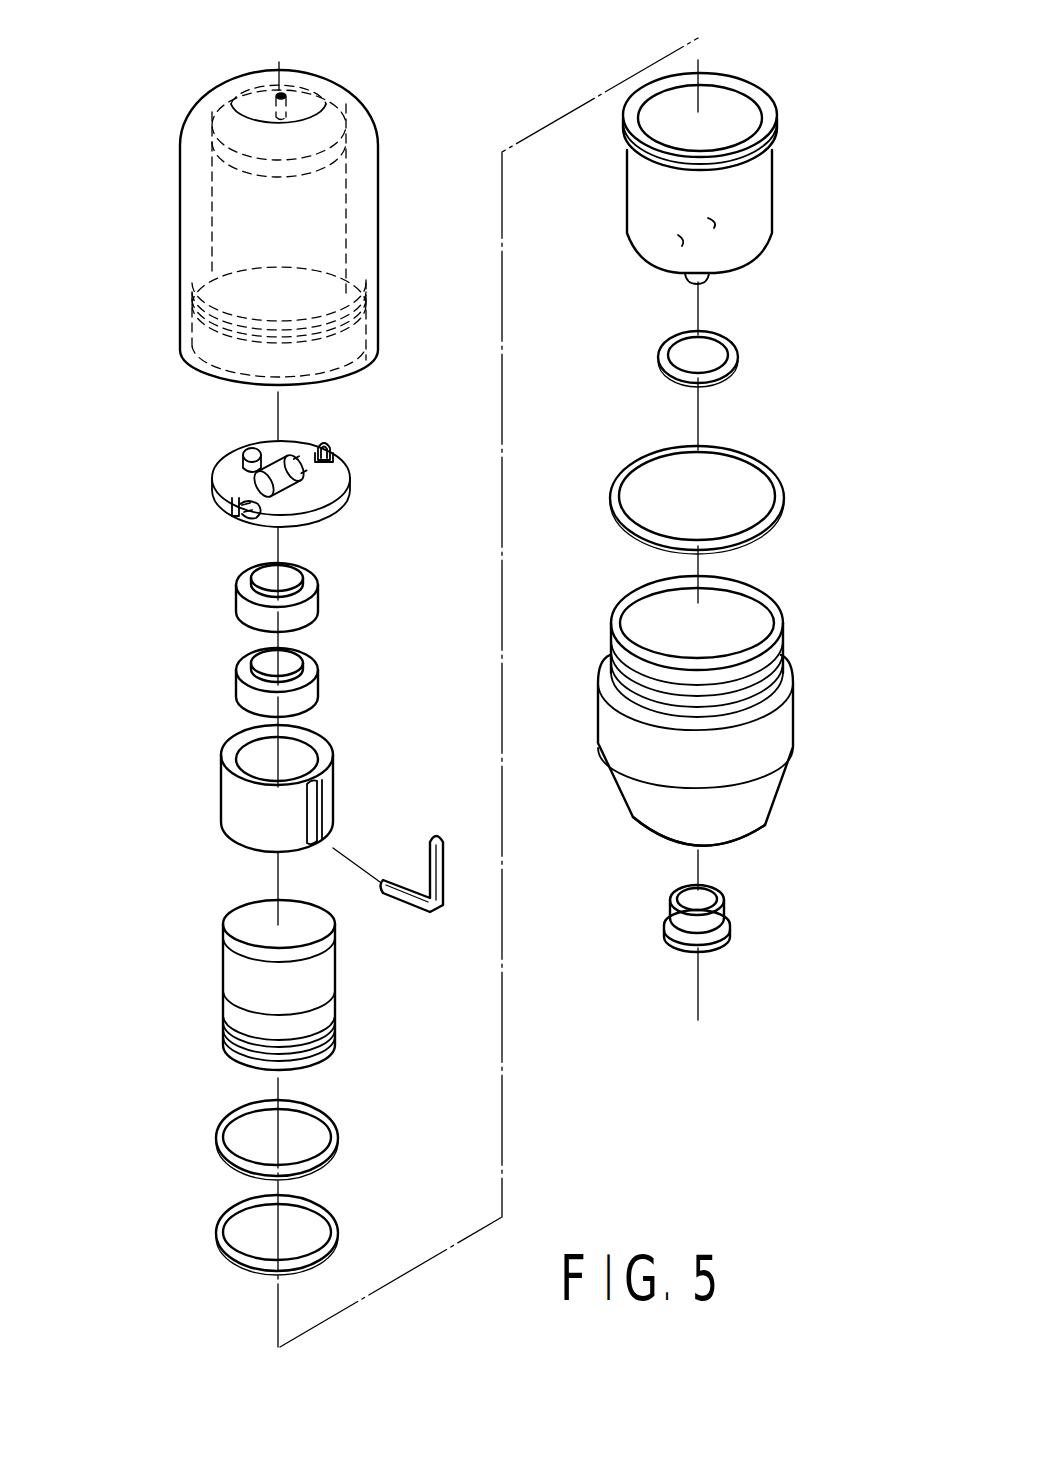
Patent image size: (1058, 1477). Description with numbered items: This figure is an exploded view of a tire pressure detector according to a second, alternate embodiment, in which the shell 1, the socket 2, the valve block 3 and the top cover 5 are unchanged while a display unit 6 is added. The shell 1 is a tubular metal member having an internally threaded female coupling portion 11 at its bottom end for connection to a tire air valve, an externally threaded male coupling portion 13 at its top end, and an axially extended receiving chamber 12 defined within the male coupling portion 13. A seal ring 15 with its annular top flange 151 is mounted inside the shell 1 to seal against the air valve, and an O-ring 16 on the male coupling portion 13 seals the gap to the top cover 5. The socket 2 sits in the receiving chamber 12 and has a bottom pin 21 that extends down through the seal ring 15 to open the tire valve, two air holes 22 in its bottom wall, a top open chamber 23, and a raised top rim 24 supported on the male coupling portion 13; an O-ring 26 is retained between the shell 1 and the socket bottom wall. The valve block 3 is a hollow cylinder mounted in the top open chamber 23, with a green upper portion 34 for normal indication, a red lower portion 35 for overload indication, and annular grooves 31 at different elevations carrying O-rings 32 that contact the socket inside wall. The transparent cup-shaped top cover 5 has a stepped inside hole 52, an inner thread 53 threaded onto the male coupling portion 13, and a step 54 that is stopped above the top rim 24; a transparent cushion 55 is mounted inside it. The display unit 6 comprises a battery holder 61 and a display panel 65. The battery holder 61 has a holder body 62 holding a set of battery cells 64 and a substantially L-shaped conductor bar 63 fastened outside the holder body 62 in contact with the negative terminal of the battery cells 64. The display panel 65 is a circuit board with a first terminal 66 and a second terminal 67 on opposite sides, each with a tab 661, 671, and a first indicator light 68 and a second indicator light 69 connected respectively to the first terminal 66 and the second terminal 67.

The shell 1 is at (772, 737).
The internally threaded female coupling portion 11 is at (733, 845).
The axially extended receiving chamber 12 is at (730, 605).
The externally threaded male coupling portion 13 is at (760, 687).
The seal ring 15 is at (718, 936).
The cap boss 151 is at (726, 900).
The O-ring 16 is at (745, 458).
The socket 2 is at (760, 190).
The bottom pin 21 is at (710, 280).
The air holes 22 is at (722, 225).
The top open chamber 23 is at (750, 98).
The top rim 24 is at (668, 167).
The O-ring 26 is at (740, 356).
The valve block 3 is at (320, 973).
The annular grooves 31 is at (310, 1035).
The O-rings 32 is at (336, 1128).
The upper portion 34 is at (237, 975).
The lower portion 35 is at (327, 1008).
The top cover 5 is at (185, 112).
The stepped inside hole 52 is at (190, 245).
The inner thread 53 is at (225, 380).
The step 54 is at (372, 315).
The transparent cushion 55 is at (285, 92).
The display unit 6 is at (163, 628).
The battery holder 61 is at (228, 730).
The holder body 62 is at (330, 752).
The L-shaped conductor bar 63 is at (420, 857).
The battery cells 64 is at (312, 608).
The display panel 65 is at (383, 461).
The first terminal 66 is at (335, 445).
The contact tab 661 is at (328, 440).
The second terminal 67 is at (222, 516).
The contact tab 671 is at (250, 510).
The first indicator light 68 is at (302, 474).
The second indicator light 69 is at (250, 463).